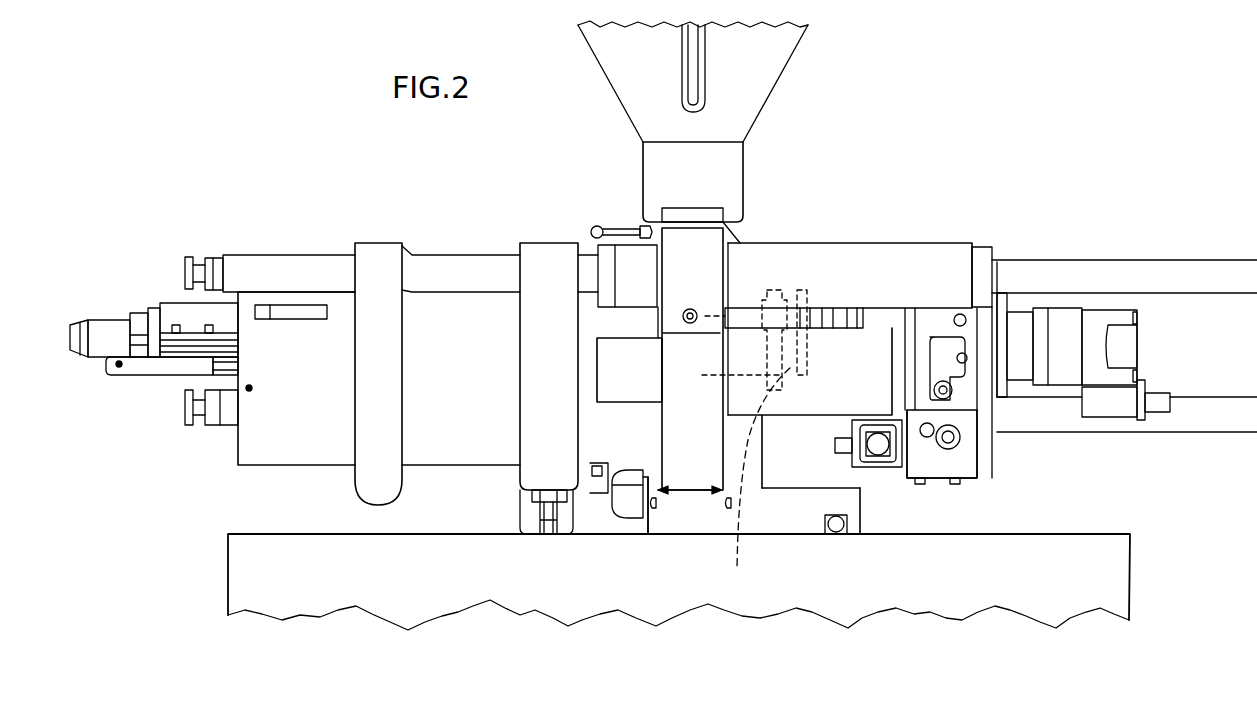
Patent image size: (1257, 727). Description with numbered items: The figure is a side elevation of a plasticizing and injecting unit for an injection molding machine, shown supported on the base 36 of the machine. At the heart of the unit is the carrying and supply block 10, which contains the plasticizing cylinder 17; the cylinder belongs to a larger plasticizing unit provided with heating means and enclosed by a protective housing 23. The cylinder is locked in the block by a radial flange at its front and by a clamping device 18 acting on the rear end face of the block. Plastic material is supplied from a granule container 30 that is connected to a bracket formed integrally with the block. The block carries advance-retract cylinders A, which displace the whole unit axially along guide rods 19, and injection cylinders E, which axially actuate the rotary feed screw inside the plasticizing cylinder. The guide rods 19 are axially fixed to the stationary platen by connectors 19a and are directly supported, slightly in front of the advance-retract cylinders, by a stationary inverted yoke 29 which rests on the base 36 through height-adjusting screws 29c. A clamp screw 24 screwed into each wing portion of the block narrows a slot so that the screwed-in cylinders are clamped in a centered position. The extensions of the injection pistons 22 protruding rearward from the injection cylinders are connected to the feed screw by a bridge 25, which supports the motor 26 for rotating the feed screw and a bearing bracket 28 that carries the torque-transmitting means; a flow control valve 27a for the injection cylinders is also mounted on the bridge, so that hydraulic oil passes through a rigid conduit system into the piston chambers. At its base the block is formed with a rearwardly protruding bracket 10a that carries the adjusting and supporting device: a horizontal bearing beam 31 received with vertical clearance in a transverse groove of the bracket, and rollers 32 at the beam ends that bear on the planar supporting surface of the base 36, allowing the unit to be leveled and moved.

The carrying and supply block 10 is at (676, 537).
The bracket 10a is at (797, 508).
The plasticizing cylinder 17 is at (156, 300).
The clamping device 18 is at (754, 445).
The guide rods 19 is at (287, 268).
The connectors 19a is at (188, 260).
The injection piston 22 is at (625, 404).
The protective housing 23 is at (460, 389).
The clamp screw 24 is at (697, 310).
The bridge 25 is at (947, 484).
The motor 26 is at (1122, 348).
The flow control valve 27a is at (877, 448).
The bearing bracket 28 is at (885, 320).
The inverted yoke 29 is at (558, 272).
The adjusting screws 29c is at (537, 522).
The granule container 30 is at (705, 173).
The bearing beam 31 is at (850, 522).
The rollers 32 is at (843, 534).
The base 36 is at (368, 594).
The advance-retract cylinders A is at (890, 243).
The injection cylinders E is at (863, 320).